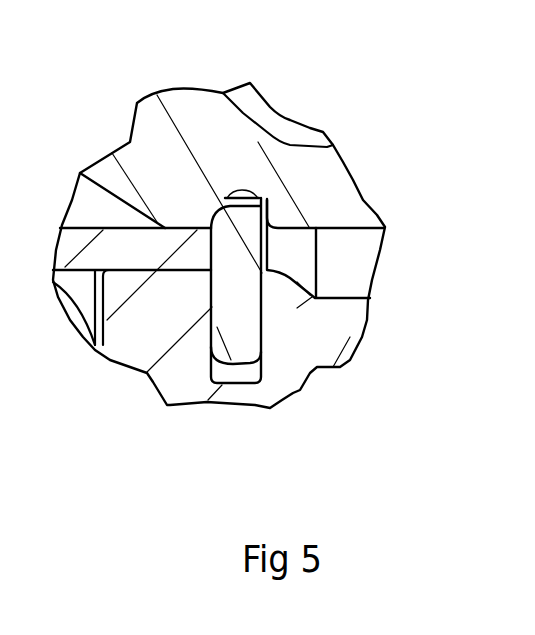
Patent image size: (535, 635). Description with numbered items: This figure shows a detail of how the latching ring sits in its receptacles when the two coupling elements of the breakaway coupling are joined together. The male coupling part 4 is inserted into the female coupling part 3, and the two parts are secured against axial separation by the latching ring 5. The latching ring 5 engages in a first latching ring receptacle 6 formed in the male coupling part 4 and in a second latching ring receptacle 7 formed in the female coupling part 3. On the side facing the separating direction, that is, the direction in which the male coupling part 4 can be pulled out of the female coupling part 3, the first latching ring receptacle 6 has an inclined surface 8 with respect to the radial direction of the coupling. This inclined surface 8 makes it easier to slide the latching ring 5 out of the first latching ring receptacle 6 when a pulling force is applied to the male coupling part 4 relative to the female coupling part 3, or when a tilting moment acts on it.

The female coupling part 3 is at (335, 335).
The male coupling part 4 is at (165, 157).
The latching ring 5 is at (247, 330).
The first latching ring receptacle 6 is at (265, 197).
The second latching ring receptacle 7 is at (231, 376).
The inclined surface 8 is at (240, 197).